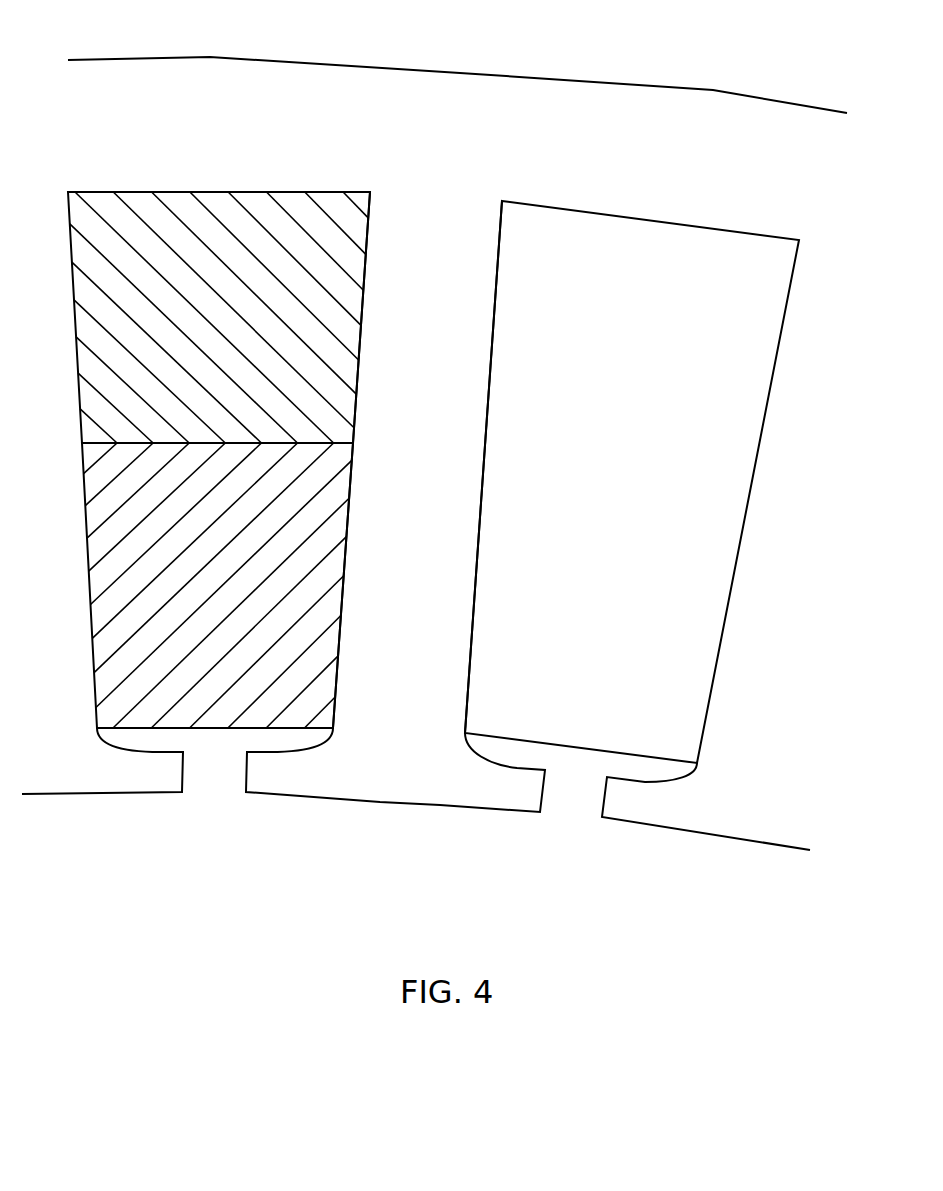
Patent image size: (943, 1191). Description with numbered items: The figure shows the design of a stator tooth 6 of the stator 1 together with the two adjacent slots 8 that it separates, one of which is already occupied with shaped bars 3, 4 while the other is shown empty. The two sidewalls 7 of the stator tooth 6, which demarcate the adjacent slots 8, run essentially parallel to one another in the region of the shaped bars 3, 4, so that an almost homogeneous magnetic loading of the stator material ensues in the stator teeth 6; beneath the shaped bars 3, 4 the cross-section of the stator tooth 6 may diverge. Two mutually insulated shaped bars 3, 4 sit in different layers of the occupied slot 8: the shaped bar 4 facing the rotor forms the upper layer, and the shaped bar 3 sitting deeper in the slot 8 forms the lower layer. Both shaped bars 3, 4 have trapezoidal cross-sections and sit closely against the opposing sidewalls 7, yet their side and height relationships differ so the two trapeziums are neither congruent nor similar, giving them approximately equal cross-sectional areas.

The stator 1 is at (433, 153).
The shaped bar 3 is at (150, 376).
The shaped bar 4 is at (125, 598).
The stator tooth 6 is at (431, 445).
The sidewall 7 is at (357, 398).
The slot 8 is at (632, 476).